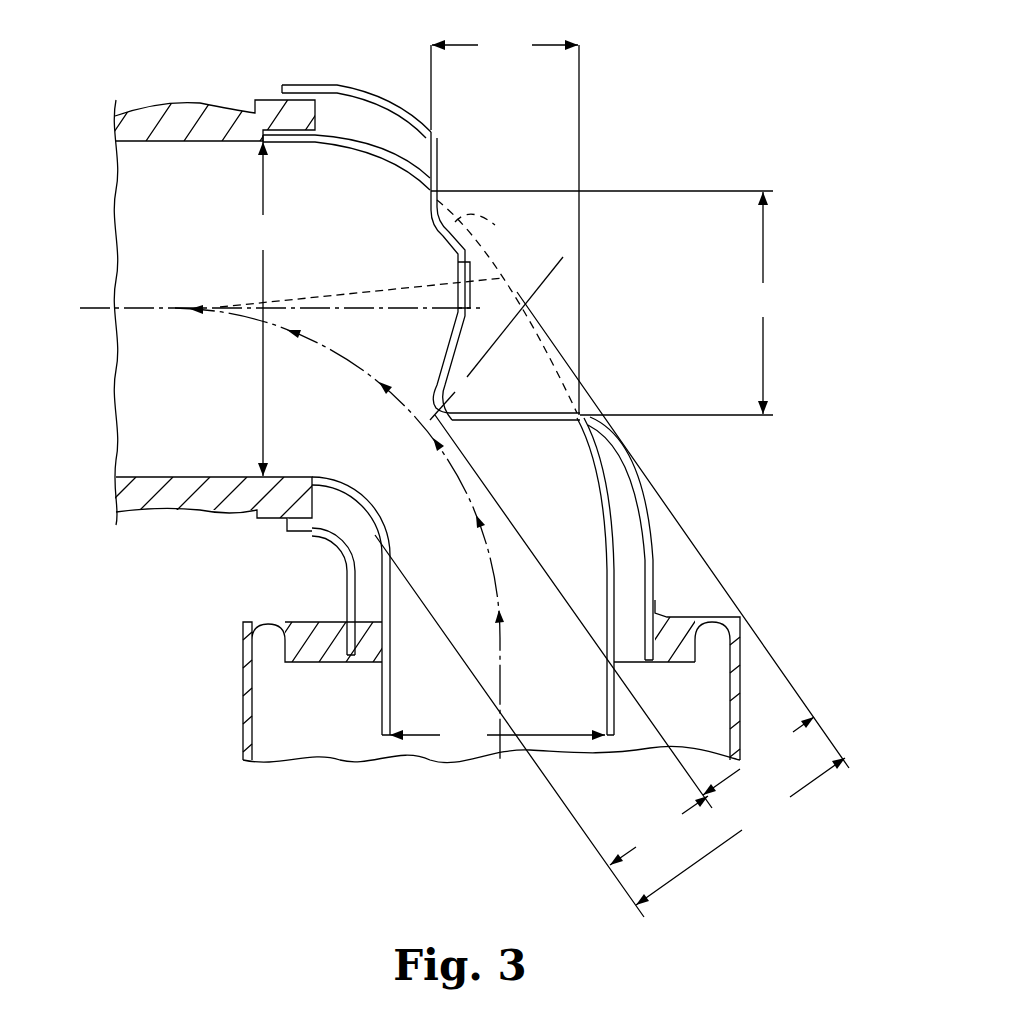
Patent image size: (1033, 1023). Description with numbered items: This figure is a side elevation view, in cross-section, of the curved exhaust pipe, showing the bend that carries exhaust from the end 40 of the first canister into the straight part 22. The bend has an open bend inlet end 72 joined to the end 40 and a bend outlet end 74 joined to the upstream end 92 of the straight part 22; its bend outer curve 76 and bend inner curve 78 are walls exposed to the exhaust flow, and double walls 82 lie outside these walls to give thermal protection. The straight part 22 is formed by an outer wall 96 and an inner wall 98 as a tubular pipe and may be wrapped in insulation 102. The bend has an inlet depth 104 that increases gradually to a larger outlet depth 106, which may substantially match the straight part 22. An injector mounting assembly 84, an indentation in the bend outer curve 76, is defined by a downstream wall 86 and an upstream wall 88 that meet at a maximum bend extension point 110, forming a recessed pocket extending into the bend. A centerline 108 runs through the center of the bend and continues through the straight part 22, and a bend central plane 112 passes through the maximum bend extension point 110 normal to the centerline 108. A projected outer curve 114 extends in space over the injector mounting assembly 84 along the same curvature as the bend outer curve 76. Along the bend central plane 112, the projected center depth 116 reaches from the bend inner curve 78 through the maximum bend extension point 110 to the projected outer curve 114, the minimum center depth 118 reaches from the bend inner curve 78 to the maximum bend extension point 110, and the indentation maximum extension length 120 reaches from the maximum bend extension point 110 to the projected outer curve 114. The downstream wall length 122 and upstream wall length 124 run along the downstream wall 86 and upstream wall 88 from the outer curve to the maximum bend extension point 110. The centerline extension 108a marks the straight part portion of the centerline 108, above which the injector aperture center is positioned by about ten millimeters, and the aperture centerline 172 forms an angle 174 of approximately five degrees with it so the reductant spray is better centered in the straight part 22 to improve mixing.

The straight part 22 is at (149, 105).
The end of first canister 40 is at (243, 700).
The bend inlet end 72 is at (416, 747).
The bend outlet end 74 is at (241, 465).
The bend outer curve 76 is at (394, 162).
The bend inner curve 78 is at (418, 435).
The double walls 82 is at (328, 88).
The injector mounting assembly 84 is at (497, 298).
The downstream wall 86 is at (425, 279).
The upstream wall 88 is at (535, 422).
The upstream end 92 is at (155, 512).
The outer wall 96 is at (154, 146).
The inner wall 98 is at (180, 472).
The insulation 102 is at (168, 508).
The inlet depth 104 is at (497, 735).
The outlet depth 106 is at (263, 309).
The centerline 108 is at (130, 307).
The centerline extension 108a is at (322, 310).
The maximum bend extension point 110 is at (437, 413).
The bend central plane 112 is at (545, 283).
The projected outer curve 114 is at (507, 303).
The projected center depth 116 is at (612, 604).
The minimum center depth 118 is at (659, 830).
The indentation maximum extension length 120 is at (758, 756).
The downstream wall length 122 is at (607, 303).
The upstream wall length 124 is at (505, 224).
The aperture centerline 172 is at (283, 300).
The angle 174 is at (333, 310).